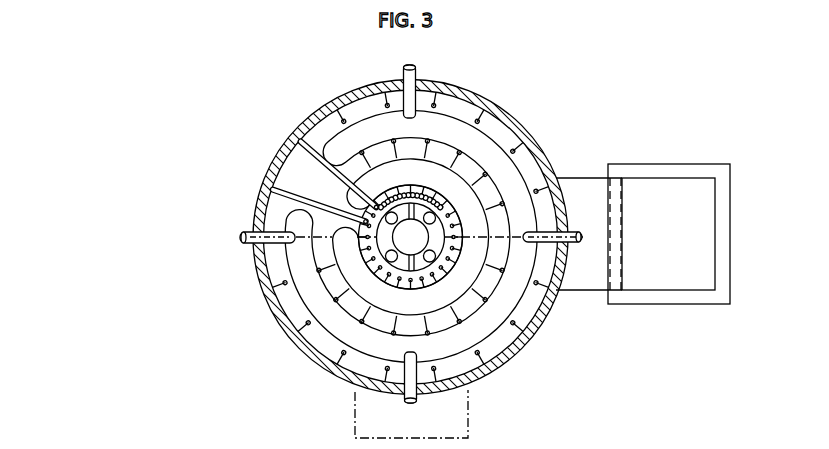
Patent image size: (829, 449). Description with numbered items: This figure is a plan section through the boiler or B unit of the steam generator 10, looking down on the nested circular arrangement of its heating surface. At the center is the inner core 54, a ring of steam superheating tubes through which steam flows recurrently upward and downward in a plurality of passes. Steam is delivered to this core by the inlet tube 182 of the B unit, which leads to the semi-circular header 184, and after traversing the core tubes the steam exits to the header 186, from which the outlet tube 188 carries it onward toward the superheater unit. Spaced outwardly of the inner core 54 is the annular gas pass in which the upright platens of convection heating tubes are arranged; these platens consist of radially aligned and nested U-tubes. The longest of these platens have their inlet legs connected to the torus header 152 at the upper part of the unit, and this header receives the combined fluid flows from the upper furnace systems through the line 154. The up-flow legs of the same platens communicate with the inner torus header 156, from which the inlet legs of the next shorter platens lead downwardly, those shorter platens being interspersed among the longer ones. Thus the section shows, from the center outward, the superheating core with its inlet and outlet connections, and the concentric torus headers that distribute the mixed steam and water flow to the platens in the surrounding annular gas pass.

The rotary device / housing 10 is at (502, 93).
The inner core 54 is at (397, 197).
The torus header 152 is at (507, 168).
The line 154 is at (414, 68).
The inner torus header 156 is at (430, 312).
The inlet tube 182 is at (437, 210).
The semi-circular header 184 is at (426, 250).
The header 186 is at (387, 229).
The outlet tube 188 is at (367, 208).